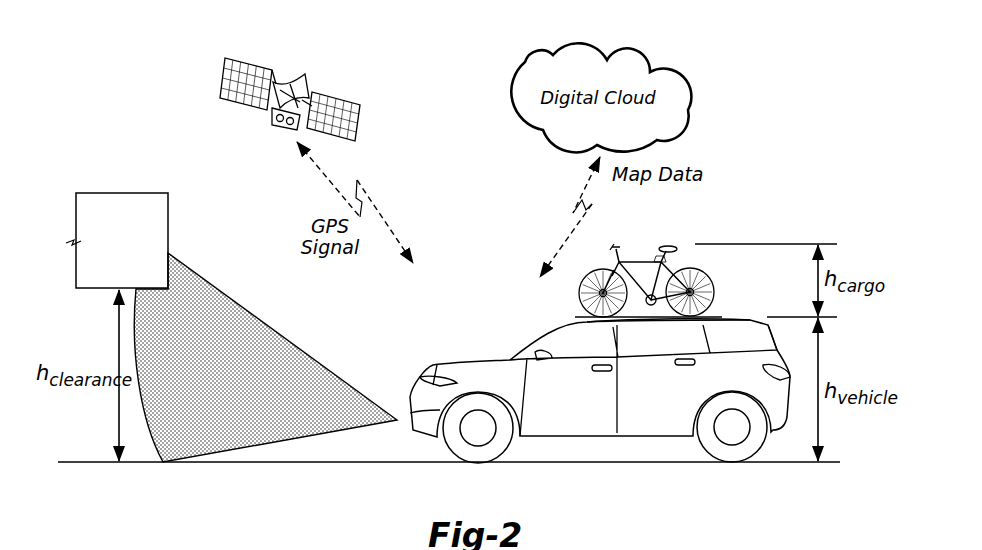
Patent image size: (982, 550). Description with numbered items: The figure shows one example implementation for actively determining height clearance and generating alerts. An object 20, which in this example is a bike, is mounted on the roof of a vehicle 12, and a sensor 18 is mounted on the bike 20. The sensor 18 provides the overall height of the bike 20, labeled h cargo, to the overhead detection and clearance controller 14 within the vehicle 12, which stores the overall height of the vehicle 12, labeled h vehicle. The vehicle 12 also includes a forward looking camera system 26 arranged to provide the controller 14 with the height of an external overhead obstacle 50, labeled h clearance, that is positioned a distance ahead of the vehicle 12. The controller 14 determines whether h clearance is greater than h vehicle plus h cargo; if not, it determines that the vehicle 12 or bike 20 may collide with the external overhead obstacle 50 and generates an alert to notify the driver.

The vehicle 12 is at (540, 337).
The overhead detection and clearance controller 14 is at (584, 404).
The sensor 18 is at (718, 283).
The object 20 is at (642, 258).
The forward looking camera system 26 is at (516, 386).
The external overhead obstacle 50 is at (120, 193).